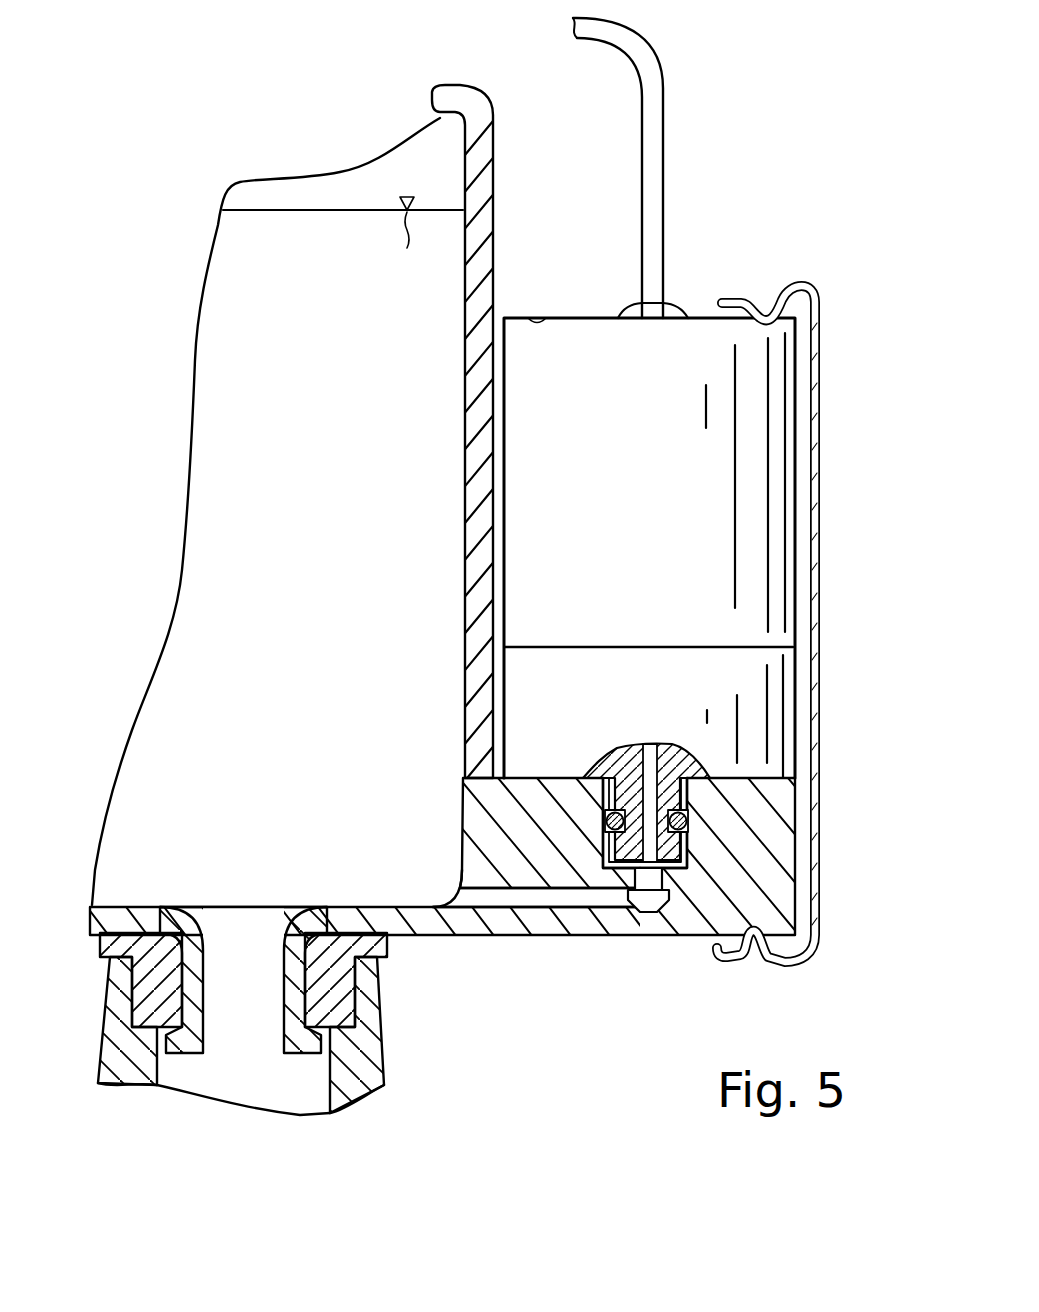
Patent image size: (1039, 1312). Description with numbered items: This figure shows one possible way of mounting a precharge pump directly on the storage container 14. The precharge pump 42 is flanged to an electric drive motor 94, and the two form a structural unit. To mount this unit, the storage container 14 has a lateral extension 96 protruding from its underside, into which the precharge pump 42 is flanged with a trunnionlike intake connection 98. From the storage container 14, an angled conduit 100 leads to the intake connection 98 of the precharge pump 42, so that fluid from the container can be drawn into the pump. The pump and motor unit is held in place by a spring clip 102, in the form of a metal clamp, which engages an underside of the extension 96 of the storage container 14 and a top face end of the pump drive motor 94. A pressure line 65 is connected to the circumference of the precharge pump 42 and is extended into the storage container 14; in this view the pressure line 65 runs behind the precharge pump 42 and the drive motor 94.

The storage container 14 is at (486, 185).
The pressure line 65 is at (657, 148).
The electric drive motor 94 is at (777, 520).
The precharge pump 42 is at (755, 710).
The spring clip 102 is at (820, 413).
The intake connection 98 is at (677, 850).
The lateral extension 96 is at (522, 858).
The angled conduit 100 is at (588, 895).